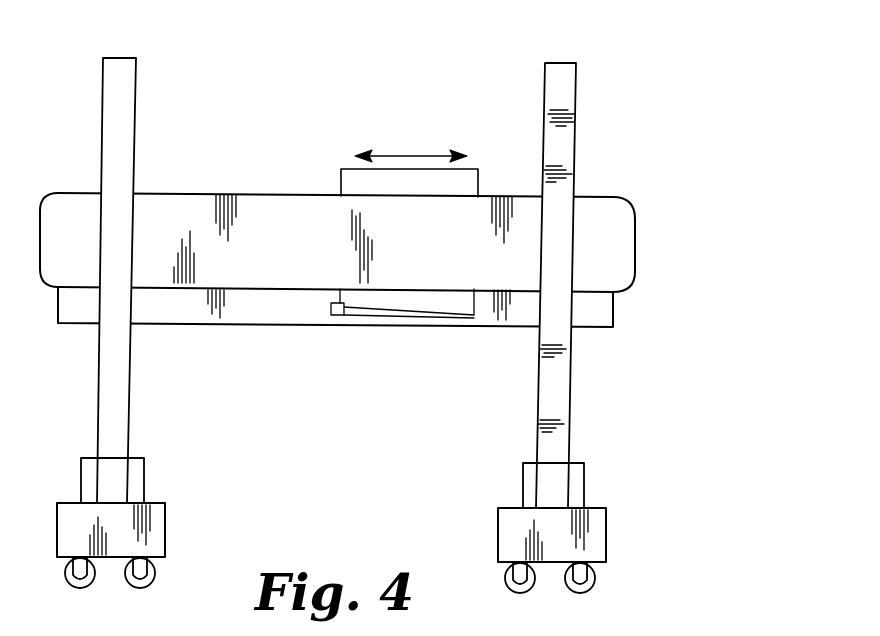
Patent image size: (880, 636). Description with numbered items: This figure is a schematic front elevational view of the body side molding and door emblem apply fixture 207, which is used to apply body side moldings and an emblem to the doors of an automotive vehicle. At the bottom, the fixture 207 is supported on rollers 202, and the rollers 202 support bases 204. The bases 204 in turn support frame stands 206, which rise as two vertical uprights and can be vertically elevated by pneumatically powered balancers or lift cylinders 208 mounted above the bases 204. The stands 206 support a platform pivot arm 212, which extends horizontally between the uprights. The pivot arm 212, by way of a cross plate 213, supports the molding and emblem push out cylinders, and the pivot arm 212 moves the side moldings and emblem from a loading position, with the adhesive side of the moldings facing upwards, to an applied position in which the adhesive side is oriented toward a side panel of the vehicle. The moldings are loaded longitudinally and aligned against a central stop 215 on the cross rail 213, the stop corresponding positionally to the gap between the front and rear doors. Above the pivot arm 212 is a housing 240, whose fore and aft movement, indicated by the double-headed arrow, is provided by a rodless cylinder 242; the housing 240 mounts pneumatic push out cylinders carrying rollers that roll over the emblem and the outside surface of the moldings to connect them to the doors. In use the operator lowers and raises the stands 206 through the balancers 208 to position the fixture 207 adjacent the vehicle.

The body side molding and door emblem apply fixture 207 is at (487, 66).
The frame stand 206 is at (577, 120).
The housing 240 is at (340, 183).
The rodless cylinder 242 is at (636, 232).
The platform pivot arm 212 is at (614, 314).
The cross plate 213 is at (259, 312).
The central stop 215 is at (331, 309).
The lift cylinder 208 is at (585, 481).
The base 204 is at (607, 538).
The roller 202 is at (596, 576).